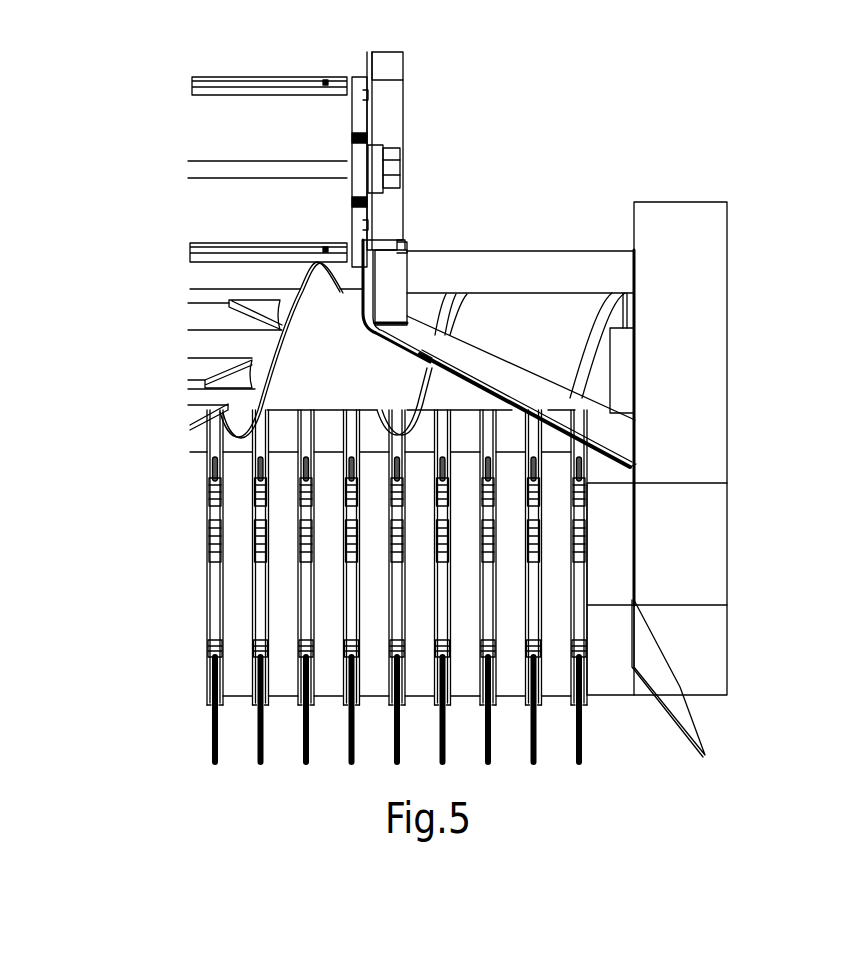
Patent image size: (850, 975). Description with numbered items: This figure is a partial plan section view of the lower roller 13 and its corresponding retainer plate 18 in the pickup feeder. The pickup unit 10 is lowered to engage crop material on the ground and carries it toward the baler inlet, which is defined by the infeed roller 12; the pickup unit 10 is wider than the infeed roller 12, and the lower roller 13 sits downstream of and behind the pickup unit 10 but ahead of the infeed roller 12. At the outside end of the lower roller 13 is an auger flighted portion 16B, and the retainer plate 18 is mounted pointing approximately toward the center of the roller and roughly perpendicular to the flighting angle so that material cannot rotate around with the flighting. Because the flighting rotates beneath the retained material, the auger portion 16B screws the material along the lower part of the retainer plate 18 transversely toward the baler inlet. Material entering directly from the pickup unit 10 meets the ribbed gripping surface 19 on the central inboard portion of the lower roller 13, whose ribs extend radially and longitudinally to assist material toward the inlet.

The pickup unit 10 is at (235, 614).
The infeed roller 12 is at (213, 120).
The lower roller 13 is at (532, 317).
The auger flighted portion 16B is at (315, 277).
The retainer plate 18 is at (495, 385).
The ribbed gripping surface 19 is at (198, 368).